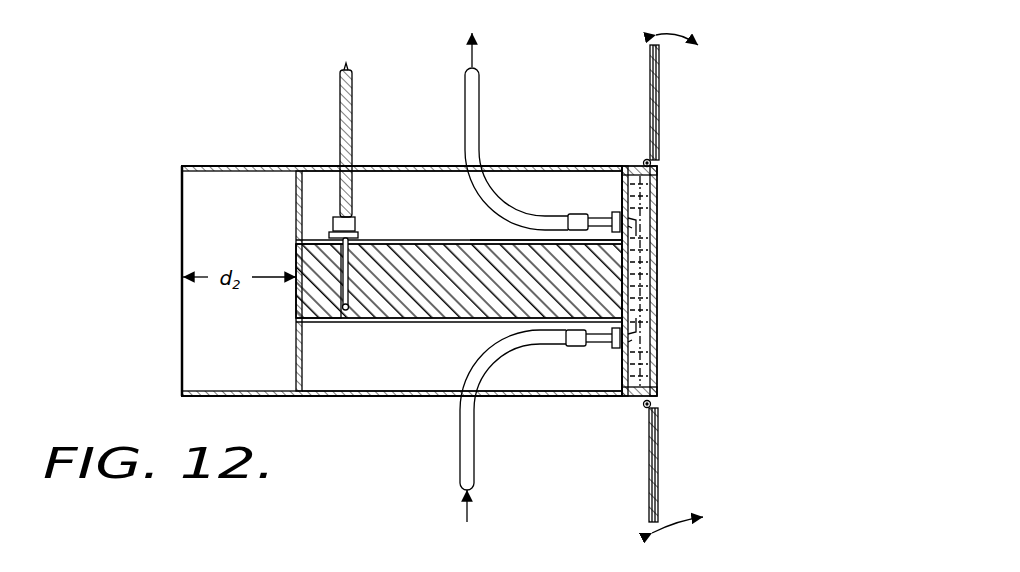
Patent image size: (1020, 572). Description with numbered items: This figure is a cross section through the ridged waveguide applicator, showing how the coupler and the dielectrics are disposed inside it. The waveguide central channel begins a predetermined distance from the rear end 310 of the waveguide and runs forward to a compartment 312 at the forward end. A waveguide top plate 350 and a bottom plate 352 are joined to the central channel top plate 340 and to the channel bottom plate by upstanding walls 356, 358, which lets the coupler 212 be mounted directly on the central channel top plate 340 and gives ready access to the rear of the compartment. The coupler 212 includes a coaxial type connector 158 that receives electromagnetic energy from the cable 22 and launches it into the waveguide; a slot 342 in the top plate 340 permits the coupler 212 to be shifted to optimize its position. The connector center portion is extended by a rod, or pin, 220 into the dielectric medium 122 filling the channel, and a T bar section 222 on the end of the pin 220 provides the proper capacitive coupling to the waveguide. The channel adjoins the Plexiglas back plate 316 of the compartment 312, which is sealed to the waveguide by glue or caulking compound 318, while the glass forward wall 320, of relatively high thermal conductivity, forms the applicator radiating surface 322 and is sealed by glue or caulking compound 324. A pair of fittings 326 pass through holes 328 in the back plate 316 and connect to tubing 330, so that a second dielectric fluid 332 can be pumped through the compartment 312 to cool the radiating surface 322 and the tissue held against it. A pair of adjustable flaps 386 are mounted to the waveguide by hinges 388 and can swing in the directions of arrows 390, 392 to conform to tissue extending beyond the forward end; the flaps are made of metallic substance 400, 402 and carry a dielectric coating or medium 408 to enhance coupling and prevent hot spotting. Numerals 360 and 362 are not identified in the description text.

The cable 22 is at (353, 103).
The dielectric medium 122 is at (468, 305).
The coaxial type connector 158 is at (358, 235).
The coupler 212 is at (352, 281).
The rod, or pin 220 is at (340, 262).
The T bar section 222 is at (343, 311).
The rear end 310 is at (182, 372).
The compartment 312 is at (636, 330).
The back plate 316 is at (640, 288).
The glue, or caulking compound 318 is at (616, 211).
The forward wall 320 is at (657, 249).
The applicator radiating surface 322 is at (652, 262).
The glue, or caulking compound 324 is at (648, 178).
The fittings 326 is at (596, 216).
The holes 328 is at (640, 225).
The tubing 330 is at (481, 92).
The second dielectric medium, or fluid 332 is at (642, 310).
The central channel top plate 340 is at (493, 242).
The slot 342 is at (385, 242).
The waveguide top plate 350 is at (240, 166).
The waveguide bottom plate 352 is at (252, 397).
The upstanding wall 356 is at (303, 190).
The upstanding wall 358 is at (303, 366).
The bottom plate 360 is at (495, 325).
The left wall 362 is at (182, 265).
The adjustable flaps 386 is at (660, 101).
The hinges 388 is at (643, 160).
The arrow 390 is at (680, 525).
The arrow 392 is at (688, 40).
The metallic substance 400 is at (659, 467).
The metallic substance 402 is at (659, 80).
The dielectric coating or medium 408 is at (659, 122).